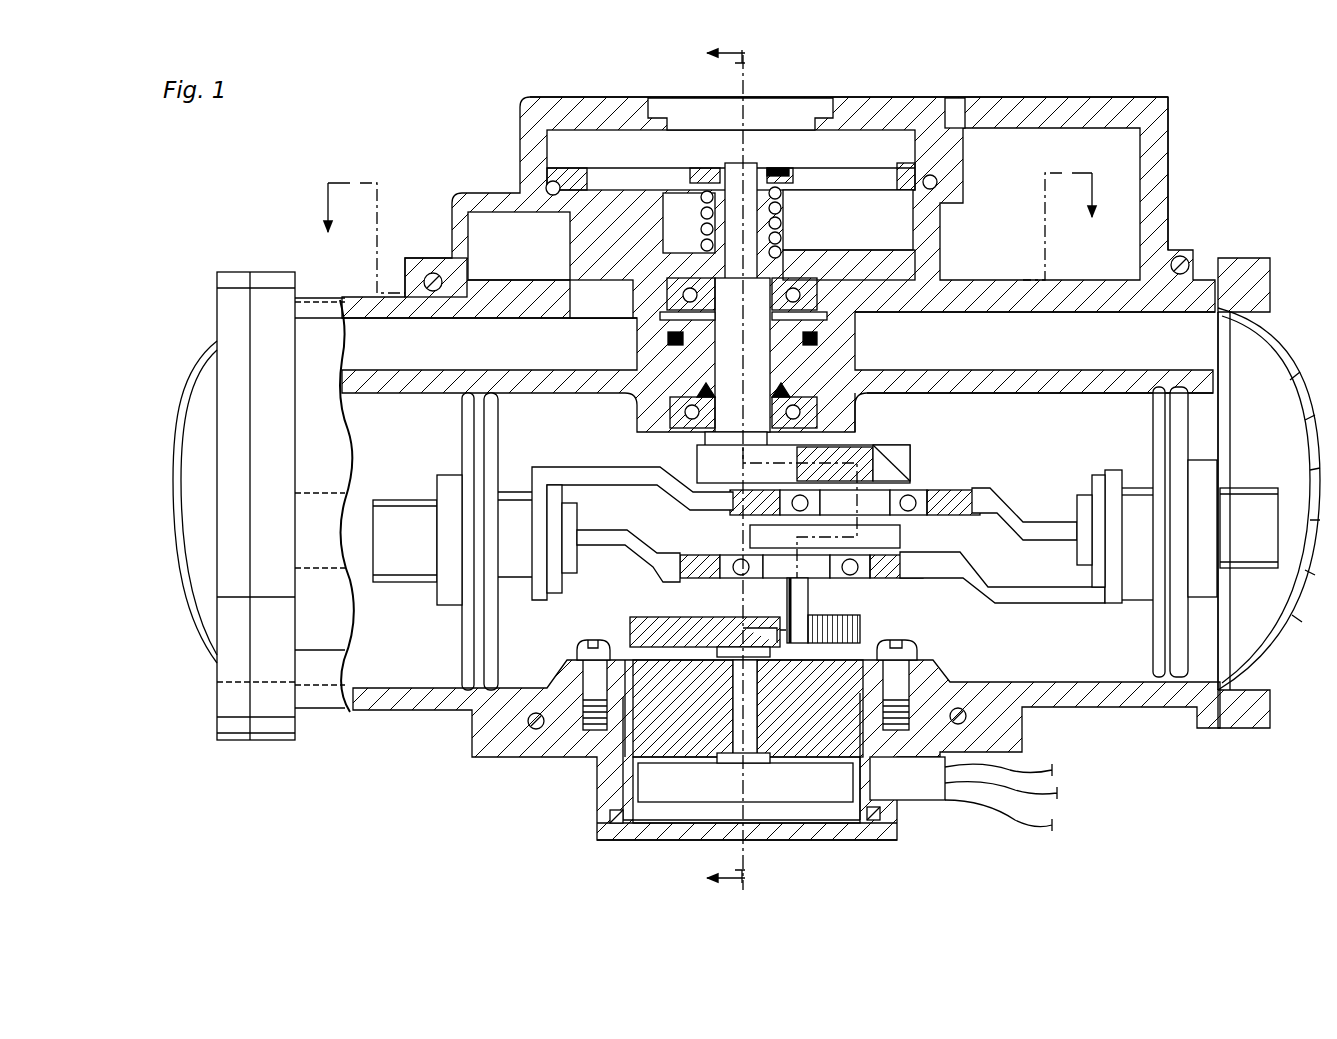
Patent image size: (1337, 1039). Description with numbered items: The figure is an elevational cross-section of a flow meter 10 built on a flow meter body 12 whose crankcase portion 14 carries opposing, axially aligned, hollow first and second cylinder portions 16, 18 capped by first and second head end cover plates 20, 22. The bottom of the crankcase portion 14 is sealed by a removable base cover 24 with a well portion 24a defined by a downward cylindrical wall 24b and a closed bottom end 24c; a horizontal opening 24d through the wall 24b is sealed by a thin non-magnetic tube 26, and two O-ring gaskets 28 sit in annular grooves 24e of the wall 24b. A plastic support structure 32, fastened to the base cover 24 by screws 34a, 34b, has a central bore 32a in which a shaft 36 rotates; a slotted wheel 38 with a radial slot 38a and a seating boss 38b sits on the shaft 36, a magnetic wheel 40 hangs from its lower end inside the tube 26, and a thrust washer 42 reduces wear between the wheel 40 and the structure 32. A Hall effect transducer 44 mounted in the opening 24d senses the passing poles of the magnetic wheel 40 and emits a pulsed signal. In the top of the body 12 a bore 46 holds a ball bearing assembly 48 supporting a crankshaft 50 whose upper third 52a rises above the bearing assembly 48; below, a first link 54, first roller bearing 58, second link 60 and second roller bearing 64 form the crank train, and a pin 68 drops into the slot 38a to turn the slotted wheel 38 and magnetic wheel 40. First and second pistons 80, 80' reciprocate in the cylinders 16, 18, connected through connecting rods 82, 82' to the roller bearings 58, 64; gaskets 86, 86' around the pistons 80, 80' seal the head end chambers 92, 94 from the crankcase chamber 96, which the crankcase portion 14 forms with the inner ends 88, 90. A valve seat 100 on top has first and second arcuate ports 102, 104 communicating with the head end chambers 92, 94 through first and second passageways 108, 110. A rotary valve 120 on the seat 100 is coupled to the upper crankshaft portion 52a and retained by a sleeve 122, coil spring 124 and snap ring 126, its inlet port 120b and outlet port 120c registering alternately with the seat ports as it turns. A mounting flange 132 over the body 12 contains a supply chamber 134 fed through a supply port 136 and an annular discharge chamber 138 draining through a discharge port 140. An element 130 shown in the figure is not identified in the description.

The flow meter 10 is at (232, 155).
The flow meter body 12 is at (325, 290).
The crankcase portion 14 is at (825, 544).
The first cylinder portion 16 is at (396, 395).
The second cylinder portion 18 is at (1000, 393).
The first head end cover plate 20 is at (205, 345).
The second head end cover plate 22 is at (1268, 335).
The base cover 24 is at (597, 800).
The well portion 24a is at (775, 830).
The cylindrical wall 24b is at (597, 770).
The closed bottom end 24c is at (660, 840).
The opening 24d is at (915, 805).
The annular grooves 24e is at (560, 690).
The tube 26 is at (840, 830).
The O-ring gaskets 28 is at (938, 680).
The support structure 32 is at (810, 708).
The bore 32a is at (731, 732).
The screw 34a is at (585, 642).
The screw 34b is at (905, 640).
The shaft 36 is at (730, 705).
The slotted wheel 38 is at (662, 612).
The slot 38a is at (820, 622).
The boss 38b is at (712, 655).
The magnetic wheel 40 is at (746, 790).
The thrust washer 42 is at (715, 760).
The Hall effect transducer 44 is at (963, 794).
The bore 46 is at (665, 352).
The ball bearing assembly 48 is at (820, 300).
The crankshaft 50 is at (712, 438).
The upper third of upper shaft portion 52a is at (748, 180).
The first link 54 is at (803, 464).
The first roller bearing 58 is at (920, 495).
The second link 60 is at (902, 537).
The second roller bearing 64 is at (868, 575).
The pin 68 is at (787, 598).
The first piston 80 is at (417, 540).
The second piston 80' is at (1233, 528).
The first connecting rod 82 is at (632, 508).
The second connecting rod 82' is at (1011, 560).
The gasket 86 is at (510, 541).
The gasket 86' is at (1146, 532).
The first inner end 88 is at (532, 464).
The second inner end 90 is at (1093, 487).
The first head end chamber 92 is at (378, 540).
The second head end chamber 94 is at (1243, 501).
The crankcase chamber 96 is at (874, 412).
The valve seat 100 is at (520, 272).
The first arcuate port 102 is at (585, 266).
The second arcuate port 104 is at (892, 272).
The first passageway 108 is at (489, 337).
The second passageway 110 is at (1035, 329).
The rotary valve 120 is at (940, 250).
The arcuate inlet port 120b is at (848, 220).
The arcuate outlet port 120c is at (543, 246).
The sleeve 122 is at (781, 238).
The coil spring 124 is at (782, 212).
The snap ring 126 is at (790, 172).
The plate 130 is at (622, 650).
The mounting flange 132 is at (1170, 132).
The supply chamber 134 is at (731, 160).
The supply port 136 is at (815, 118).
The annular discharge chamber 138 is at (1040, 204).
The discharge port 140 is at (962, 110).